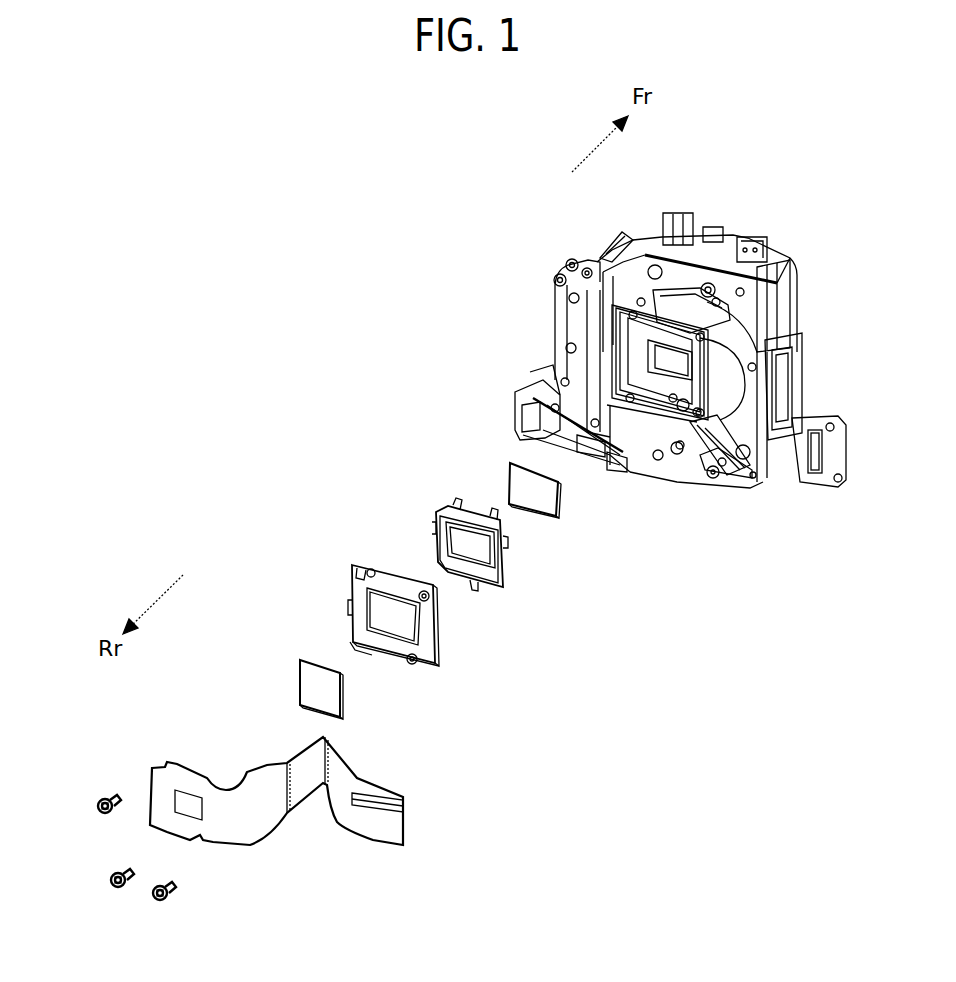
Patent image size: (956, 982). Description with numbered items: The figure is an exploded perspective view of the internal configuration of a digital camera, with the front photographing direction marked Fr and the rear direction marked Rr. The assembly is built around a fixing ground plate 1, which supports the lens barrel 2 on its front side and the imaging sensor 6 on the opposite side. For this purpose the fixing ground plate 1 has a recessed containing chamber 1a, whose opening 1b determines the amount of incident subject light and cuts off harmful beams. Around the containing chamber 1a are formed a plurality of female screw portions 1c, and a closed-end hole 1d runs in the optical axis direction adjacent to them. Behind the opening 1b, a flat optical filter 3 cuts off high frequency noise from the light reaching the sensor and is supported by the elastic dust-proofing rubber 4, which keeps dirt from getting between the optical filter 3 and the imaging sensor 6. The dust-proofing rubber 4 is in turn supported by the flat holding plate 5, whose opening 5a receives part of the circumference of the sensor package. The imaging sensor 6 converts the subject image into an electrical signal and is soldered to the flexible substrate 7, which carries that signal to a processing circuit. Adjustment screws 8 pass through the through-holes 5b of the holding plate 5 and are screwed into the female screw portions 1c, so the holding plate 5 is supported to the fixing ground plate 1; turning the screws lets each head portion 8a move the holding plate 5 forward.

The fixing ground plate 1 is at (636, 444).
The containing chamber 1a is at (612, 345).
The opening 1b is at (766, 362).
The female screw portion 1c is at (622, 248).
The closed-end hole 1d is at (640, 300).
The lens barrel 2 is at (803, 328).
The optical filter 3 is at (560, 497).
The dust-proofing rubber 4 is at (512, 560).
The holding plate 5 is at (437, 612).
The opening 5a is at (382, 598).
The through-hole 5b is at (420, 582).
The imaging sensor 6 is at (348, 690).
The flexible substrate 7 is at (262, 836).
The adjustment screw 8 is at (110, 797).
The head portion 8a is at (99, 802).